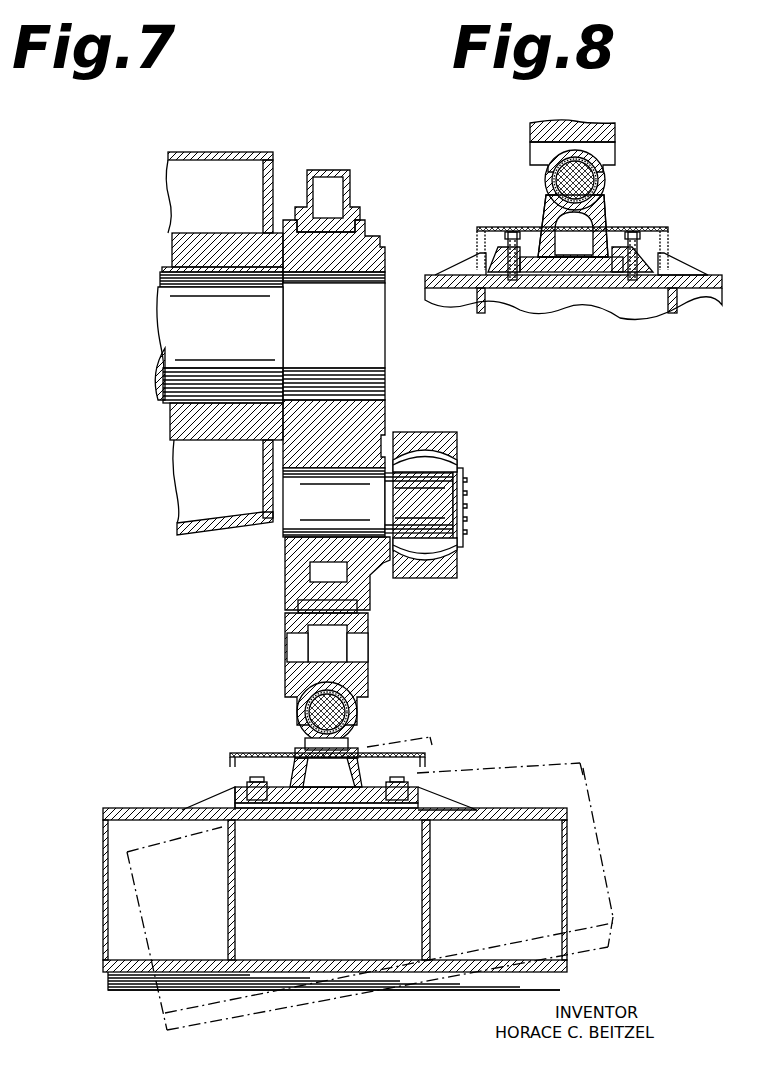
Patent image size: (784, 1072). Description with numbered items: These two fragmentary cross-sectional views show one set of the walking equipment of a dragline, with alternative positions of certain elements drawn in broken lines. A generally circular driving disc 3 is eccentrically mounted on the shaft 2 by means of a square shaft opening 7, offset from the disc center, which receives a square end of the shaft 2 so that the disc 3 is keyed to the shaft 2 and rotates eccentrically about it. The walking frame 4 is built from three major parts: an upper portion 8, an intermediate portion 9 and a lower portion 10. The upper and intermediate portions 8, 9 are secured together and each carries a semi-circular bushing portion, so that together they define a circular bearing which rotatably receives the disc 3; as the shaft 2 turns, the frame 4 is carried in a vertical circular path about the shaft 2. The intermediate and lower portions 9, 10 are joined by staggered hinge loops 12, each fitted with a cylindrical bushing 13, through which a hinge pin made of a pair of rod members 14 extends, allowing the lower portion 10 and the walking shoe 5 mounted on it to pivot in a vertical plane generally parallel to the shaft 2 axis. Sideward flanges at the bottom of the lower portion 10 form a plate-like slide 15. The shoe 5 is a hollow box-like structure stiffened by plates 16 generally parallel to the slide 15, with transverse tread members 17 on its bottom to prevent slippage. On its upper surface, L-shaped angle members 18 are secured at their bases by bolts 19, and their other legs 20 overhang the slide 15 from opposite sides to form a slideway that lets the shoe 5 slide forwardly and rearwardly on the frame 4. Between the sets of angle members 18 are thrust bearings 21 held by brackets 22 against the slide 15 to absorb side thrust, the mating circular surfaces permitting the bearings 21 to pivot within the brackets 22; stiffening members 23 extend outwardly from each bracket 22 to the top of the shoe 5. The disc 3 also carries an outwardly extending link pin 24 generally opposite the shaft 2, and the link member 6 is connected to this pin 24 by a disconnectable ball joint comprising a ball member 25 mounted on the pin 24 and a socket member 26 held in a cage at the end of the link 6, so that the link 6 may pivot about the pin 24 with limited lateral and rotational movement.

In FIG. 7, the shaft 2 is at (372, 356).
In FIG. 7, the driving member or disc 3 is at (389, 245).
In FIG. 7, the walking frame 4 is at (287, 193).
In FIG. 8, the walking frame 4 is at (591, 127).
In FIG. 7, the walking shoe 5 is at (335, 902).
In FIG. 8, the walking shoe 5 is at (573, 319).
In FIG. 7, the link member 6 is at (450, 492).
In FIG. 7, the square shaft opening 7 is at (383, 389).
In FIG. 7, the upper portion 8 is at (352, 178).
In FIG. 7, the intermediate portion 9 is at (332, 671).
In FIG. 8, the intermediate portion 9 is at (616, 132).
In FIG. 7, the lower portion 10 is at (348, 744).
In FIG. 8, the lower portion 10 is at (600, 193).
In FIG. 7, the hinge loops 12 is at (360, 716).
In FIG. 8, the hinge loops 12 is at (557, 157).
In FIG. 7, the cylindrical bushing 13 is at (306, 714).
In FIG. 8, the cylindrical bushing 13 is at (594, 180).
In FIG. 7, the rod members 14 is at (308, 704).
In FIG. 8, the rod members 14 is at (556, 185).
In FIG. 7, the slide 15 is at (291, 794).
In FIG. 8, the slide 15 is at (542, 258).
In FIG. 7, the stiffener plates 16 is at (236, 900).
In FIG. 8, the stiffener plates 16 is at (492, 312).
In FIG. 7, the tread members 17 is at (218, 990).
In FIG. 8, the angle members 18 is at (497, 252).
In FIG. 8, the bolts 19 is at (512, 230).
In FIG. 8, the legs 20 is at (600, 248).
In FIG. 7, the thrust bearings 21 is at (268, 824).
In FIG. 7, the brackets 22 is at (252, 783).
In FIG. 7, the stiffening members 23 is at (220, 787).
In FIG. 8, the stiffening members 23 is at (453, 263).
In FIG. 7, the link pin 24 is at (356, 510).
In FIG. 7, the ball member 25 is at (458, 456).
In FIG. 7, the socket member 26 is at (459, 552).